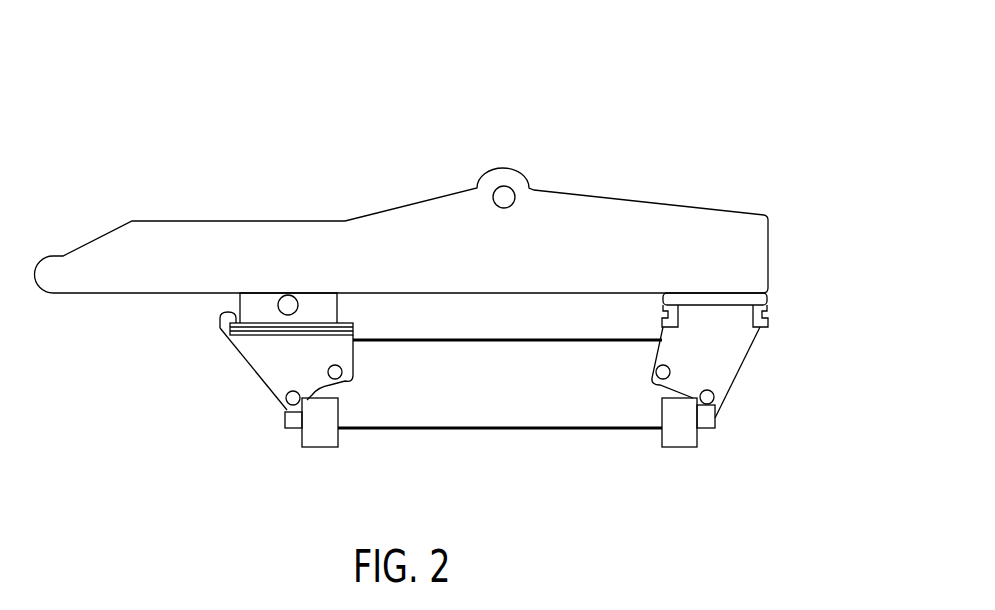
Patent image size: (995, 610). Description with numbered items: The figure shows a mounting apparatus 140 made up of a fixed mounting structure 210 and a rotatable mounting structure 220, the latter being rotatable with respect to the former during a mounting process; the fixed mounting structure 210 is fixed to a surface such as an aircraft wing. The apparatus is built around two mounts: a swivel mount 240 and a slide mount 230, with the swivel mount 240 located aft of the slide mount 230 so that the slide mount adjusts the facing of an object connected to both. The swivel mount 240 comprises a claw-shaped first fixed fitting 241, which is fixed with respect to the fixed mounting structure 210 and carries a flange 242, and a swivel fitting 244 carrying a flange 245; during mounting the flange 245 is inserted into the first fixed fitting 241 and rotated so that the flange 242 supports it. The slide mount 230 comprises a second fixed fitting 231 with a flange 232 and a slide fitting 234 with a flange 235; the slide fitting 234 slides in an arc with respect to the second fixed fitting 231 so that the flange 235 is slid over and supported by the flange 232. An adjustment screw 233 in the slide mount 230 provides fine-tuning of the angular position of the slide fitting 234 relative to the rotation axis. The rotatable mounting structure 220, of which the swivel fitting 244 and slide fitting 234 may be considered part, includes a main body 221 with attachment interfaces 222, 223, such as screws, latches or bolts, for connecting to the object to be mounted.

The mounting apparatus 140 is at (616, 37).
The fixed mounting structure 210 is at (787, 156).
The rotatable mounting structure 220 is at (552, 478).
The main body 221 is at (425, 448).
The attachment interface 222 is at (325, 464).
The attachment interface 223 is at (690, 460).
The slide mount 230 is at (210, 418).
The second fixed fitting 231 is at (376, 277).
The flange 232 is at (376, 315).
The adjustment screw 233 is at (289, 296).
The slide fitting 234 is at (248, 372).
The flange 235 is at (218, 314).
The swivel mount 240 is at (778, 417).
The first fixed fitting 241 is at (712, 302).
The flange 242 is at (797, 310).
The swivel fitting 244 is at (753, 383).
The flange 245 is at (663, 312).